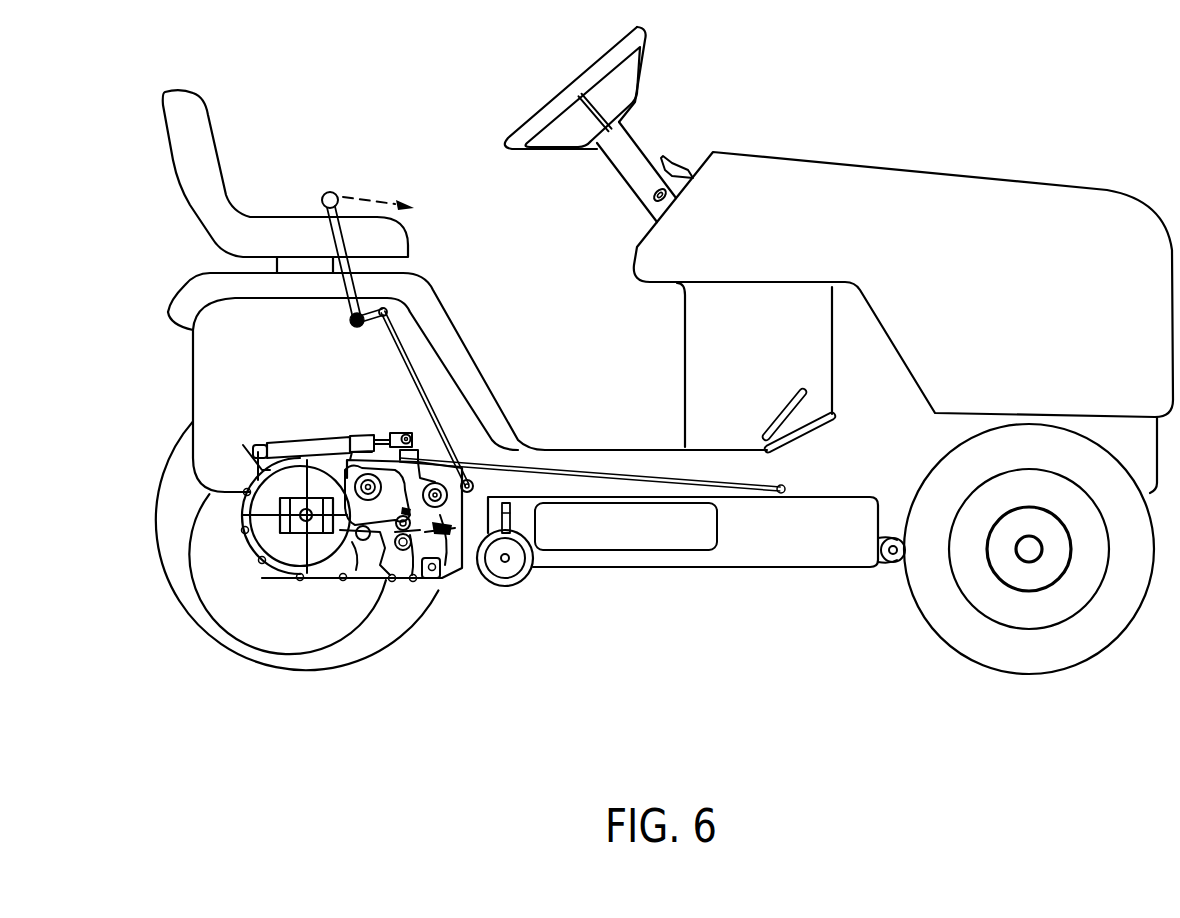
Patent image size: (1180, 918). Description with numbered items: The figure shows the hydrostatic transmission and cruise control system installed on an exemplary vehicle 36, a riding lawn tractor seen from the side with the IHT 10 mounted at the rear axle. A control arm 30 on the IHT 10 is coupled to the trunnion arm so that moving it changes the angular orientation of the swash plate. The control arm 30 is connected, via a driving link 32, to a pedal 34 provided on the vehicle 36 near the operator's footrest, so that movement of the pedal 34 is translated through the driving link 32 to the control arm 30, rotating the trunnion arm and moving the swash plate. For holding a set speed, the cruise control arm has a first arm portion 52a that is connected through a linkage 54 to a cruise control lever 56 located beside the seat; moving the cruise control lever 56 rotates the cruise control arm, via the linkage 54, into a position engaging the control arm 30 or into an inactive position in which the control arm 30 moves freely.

The IHT 10 is at (311, 425).
The control arm 30 is at (418, 438).
The driving link 32 is at (660, 477).
The pedal 34 is at (778, 415).
The vehicle 36 is at (938, 138).
The first arm portion 52a is at (466, 492).
The linkage 54 is at (401, 352).
The cruise control lever 56 is at (338, 240).